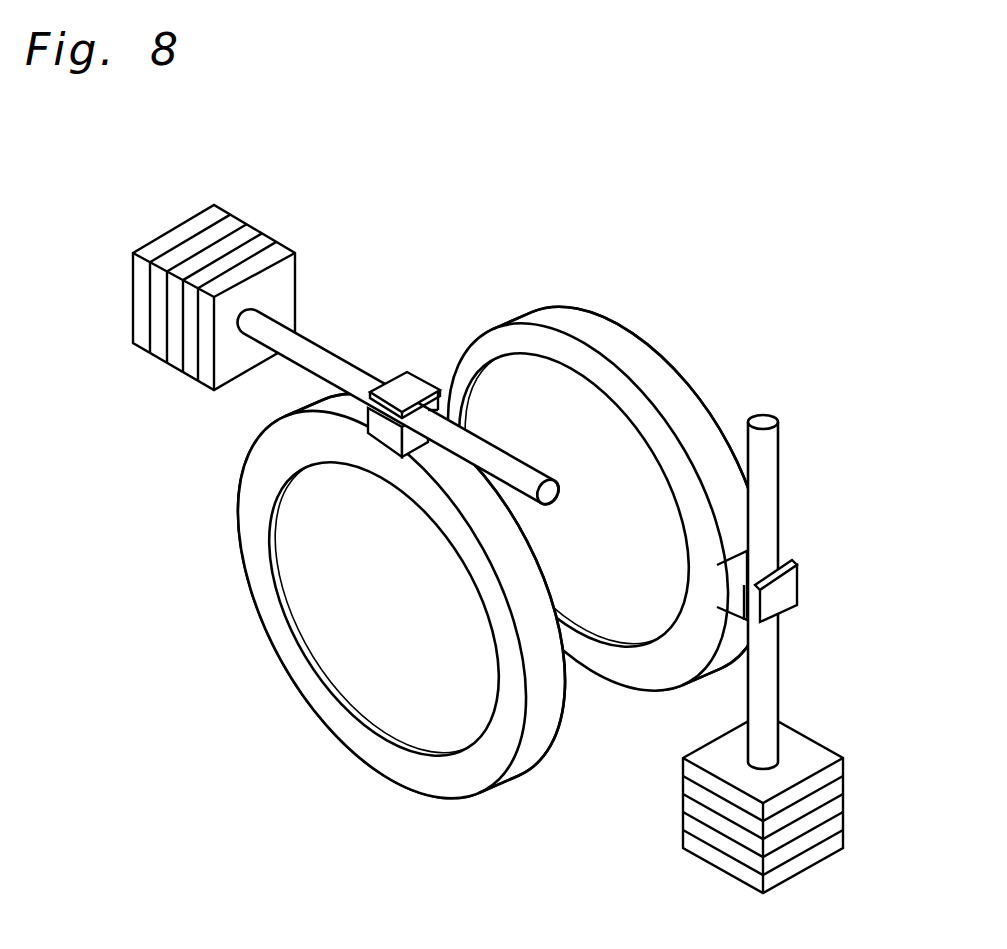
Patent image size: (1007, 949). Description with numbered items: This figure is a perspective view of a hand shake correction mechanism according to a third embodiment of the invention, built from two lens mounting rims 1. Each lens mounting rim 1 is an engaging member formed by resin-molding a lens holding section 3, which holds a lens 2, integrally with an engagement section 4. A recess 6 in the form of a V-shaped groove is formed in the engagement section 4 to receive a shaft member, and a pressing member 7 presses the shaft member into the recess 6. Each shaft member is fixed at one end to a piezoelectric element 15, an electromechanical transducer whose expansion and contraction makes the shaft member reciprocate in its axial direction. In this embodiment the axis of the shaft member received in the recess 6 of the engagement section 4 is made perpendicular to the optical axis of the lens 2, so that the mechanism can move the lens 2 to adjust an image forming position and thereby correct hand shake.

The lens mounting rim 1 is at (400, 320).
The lens 2 is at (367, 638).
The lens holding section 3 is at (634, 360).
The engagement section 4 is at (727, 590).
The recess 6 is at (322, 353).
The pressing member 7 is at (408, 383).
The piezoelectric element 15 is at (163, 362).